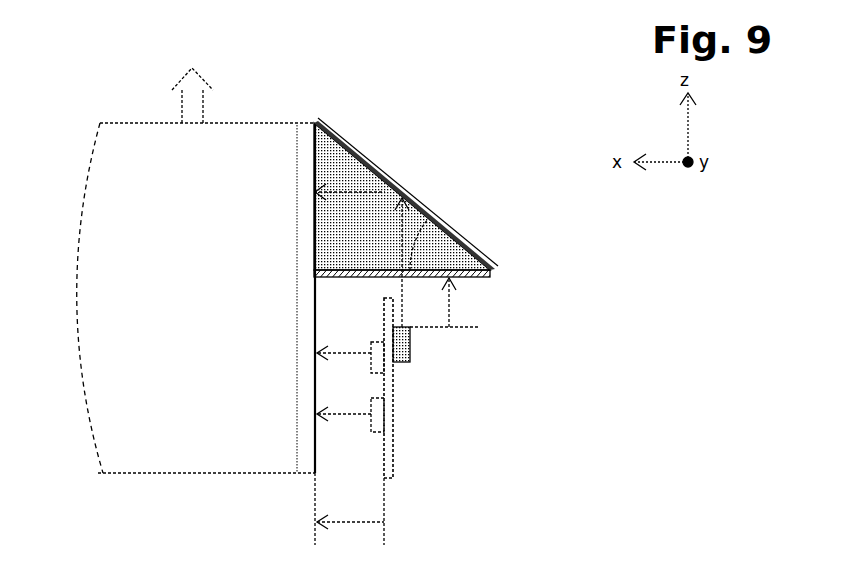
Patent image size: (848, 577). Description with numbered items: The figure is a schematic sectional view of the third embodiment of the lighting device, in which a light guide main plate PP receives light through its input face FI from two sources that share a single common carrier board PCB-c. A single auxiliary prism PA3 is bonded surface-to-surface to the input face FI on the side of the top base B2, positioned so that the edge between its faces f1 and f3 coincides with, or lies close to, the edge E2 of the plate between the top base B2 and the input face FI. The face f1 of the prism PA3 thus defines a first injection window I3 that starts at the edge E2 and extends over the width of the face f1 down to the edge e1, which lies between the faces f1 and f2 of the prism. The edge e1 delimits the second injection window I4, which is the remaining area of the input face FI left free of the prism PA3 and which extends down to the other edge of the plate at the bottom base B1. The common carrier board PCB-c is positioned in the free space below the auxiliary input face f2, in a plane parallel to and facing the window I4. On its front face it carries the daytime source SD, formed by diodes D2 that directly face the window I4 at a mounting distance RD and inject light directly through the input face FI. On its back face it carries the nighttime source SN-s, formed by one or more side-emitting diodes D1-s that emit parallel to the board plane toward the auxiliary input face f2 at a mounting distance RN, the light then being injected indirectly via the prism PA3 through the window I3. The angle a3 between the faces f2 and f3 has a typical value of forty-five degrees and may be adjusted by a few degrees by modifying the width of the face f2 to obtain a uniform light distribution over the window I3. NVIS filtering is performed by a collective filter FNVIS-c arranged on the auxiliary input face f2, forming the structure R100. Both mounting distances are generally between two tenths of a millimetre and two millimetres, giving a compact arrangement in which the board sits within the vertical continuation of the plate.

The aircraft fuselage / mounting plane PP is at (90, 157).
The top base B2 is at (148, 116).
The bottom base B1 is at (210, 478).
The first injection window I3 is at (253, 200).
The second injection window I4 is at (257, 387).
The auxiliary prism PA3 is at (480, 222).
The third prism face f3 is at (388, 168).
The plate edge E2 is at (316, 123).
The first prism face f1 is at (349, 203).
The auxiliary input face f2 is at (364, 256).
The prism angle a3 is at (422, 262).
The filter structure R100 is at (490, 263).
The collective NVIS filter FNVIS-c is at (477, 278).
The input face FI is at (305, 300).
The prism edge e1 is at (313, 278).
The common carrier board PCB-c is at (393, 400).
The side-emitting diodes D1-s is at (410, 345).
The daytime diodes D2 is at (372, 320).
The nighttime mounting distance RN is at (445, 302).
The daytime mounting distance RD is at (350, 513).
The daytime source SD is at (374, 476).
The side-emitting nighttime source SN-s is at (405, 472).